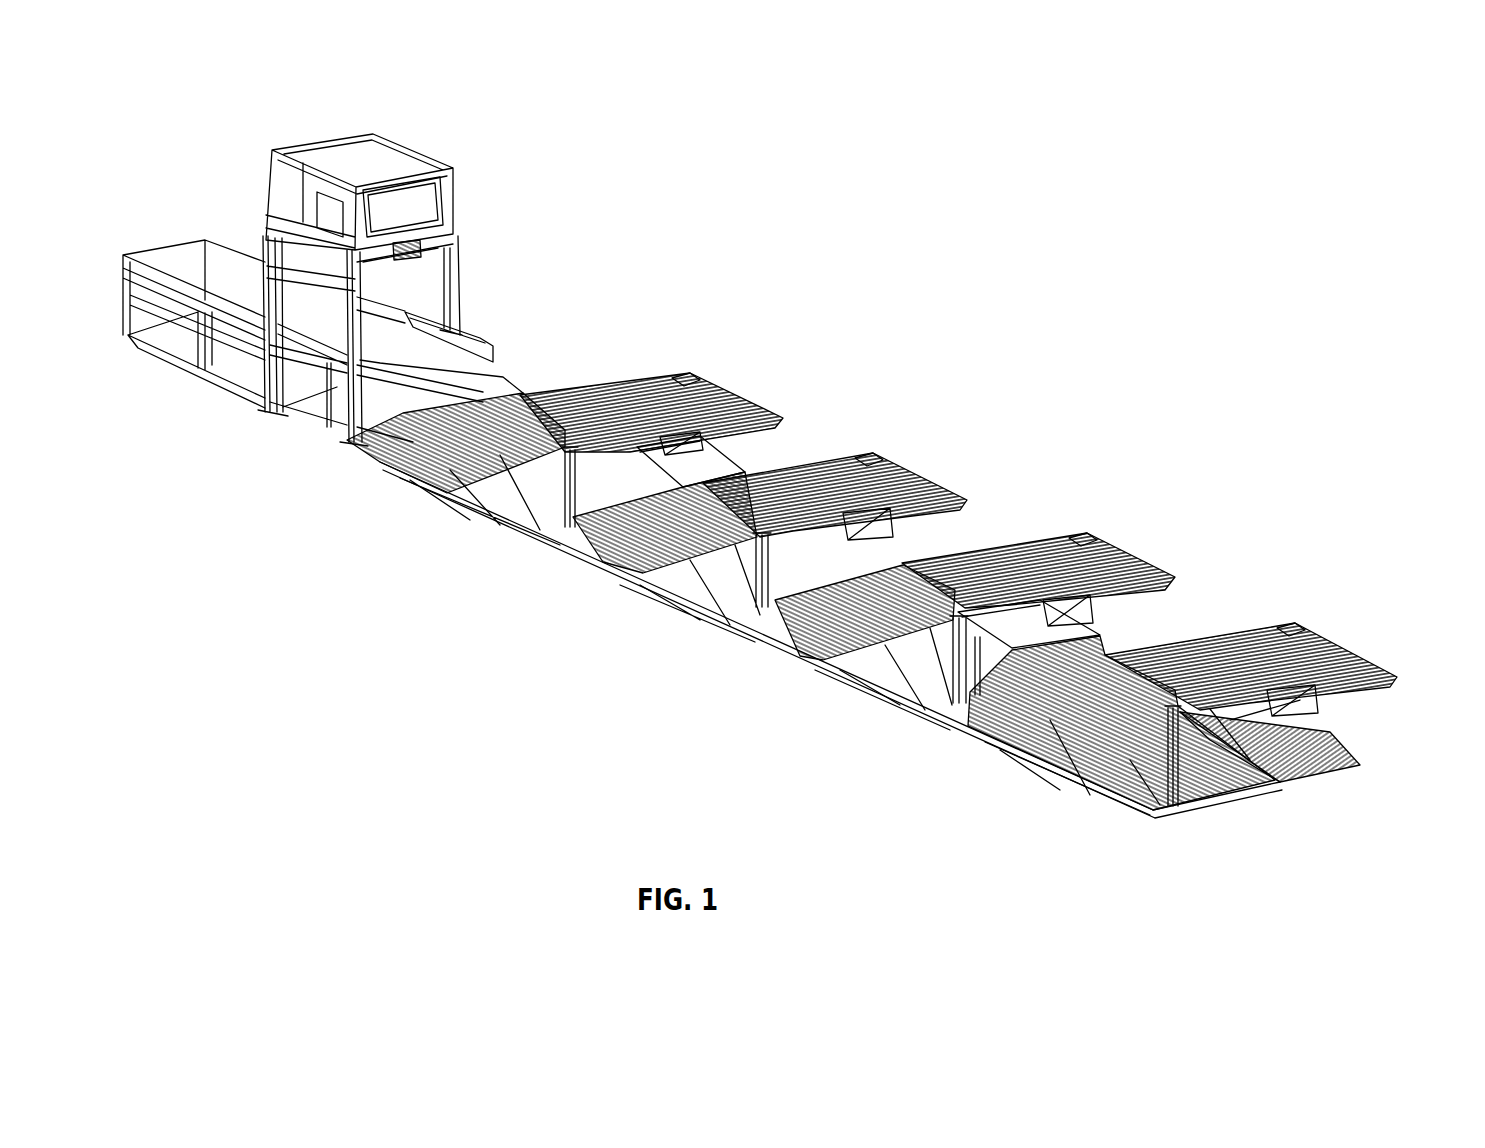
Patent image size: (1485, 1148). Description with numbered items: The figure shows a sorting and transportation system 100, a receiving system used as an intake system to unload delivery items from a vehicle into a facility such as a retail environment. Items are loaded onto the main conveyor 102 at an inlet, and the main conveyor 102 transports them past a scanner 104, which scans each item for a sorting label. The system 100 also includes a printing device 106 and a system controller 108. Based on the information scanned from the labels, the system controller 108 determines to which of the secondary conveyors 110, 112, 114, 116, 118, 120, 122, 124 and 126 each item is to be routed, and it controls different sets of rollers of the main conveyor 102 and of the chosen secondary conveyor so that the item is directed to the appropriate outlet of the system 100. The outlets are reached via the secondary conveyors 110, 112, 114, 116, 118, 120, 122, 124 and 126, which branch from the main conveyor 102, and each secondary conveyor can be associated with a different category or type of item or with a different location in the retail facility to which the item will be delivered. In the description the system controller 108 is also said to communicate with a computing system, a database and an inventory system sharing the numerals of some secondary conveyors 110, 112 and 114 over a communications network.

The sorting and transportation system 100 is at (328, 537).
The main conveyor 102 is at (192, 253).
The scanner 104 is at (363, 133).
The printing device 106 is at (408, 167).
The system controller 108 is at (443, 217).
The secondary conveyor 110 is at (753, 405).
The secondary conveyor 112 is at (430, 483).
The secondary conveyor 114 is at (910, 470).
The secondary conveyor 116 is at (620, 570).
The secondary conveyor 118 is at (1117, 553).
The secondary conveyor 120 is at (807, 653).
The secondary conveyor 122 is at (1313, 638).
The secondary conveyor 124 is at (1000, 745).
The secondary conveyor 126 is at (1345, 752).